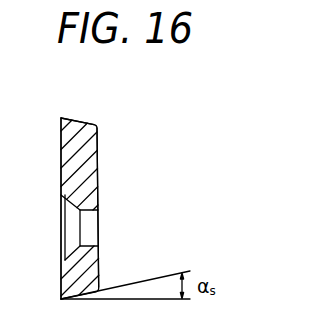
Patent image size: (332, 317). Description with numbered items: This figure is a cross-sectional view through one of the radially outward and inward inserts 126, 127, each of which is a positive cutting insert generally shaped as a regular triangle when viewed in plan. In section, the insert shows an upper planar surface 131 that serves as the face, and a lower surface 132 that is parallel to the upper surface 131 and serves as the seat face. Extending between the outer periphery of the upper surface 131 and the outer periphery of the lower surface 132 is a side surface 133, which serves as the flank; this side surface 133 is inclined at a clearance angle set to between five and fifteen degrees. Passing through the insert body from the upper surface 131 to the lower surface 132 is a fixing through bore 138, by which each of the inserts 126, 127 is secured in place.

The radially outward insert 126 is at (132, 208).
The radially inward insert 127 is at (99, 137).
The upper planar surface 131 is at (61, 147).
The lower surface 132 is at (102, 164).
The side surface 133 is at (79, 121).
The fixing through bore 138 is at (98, 210).